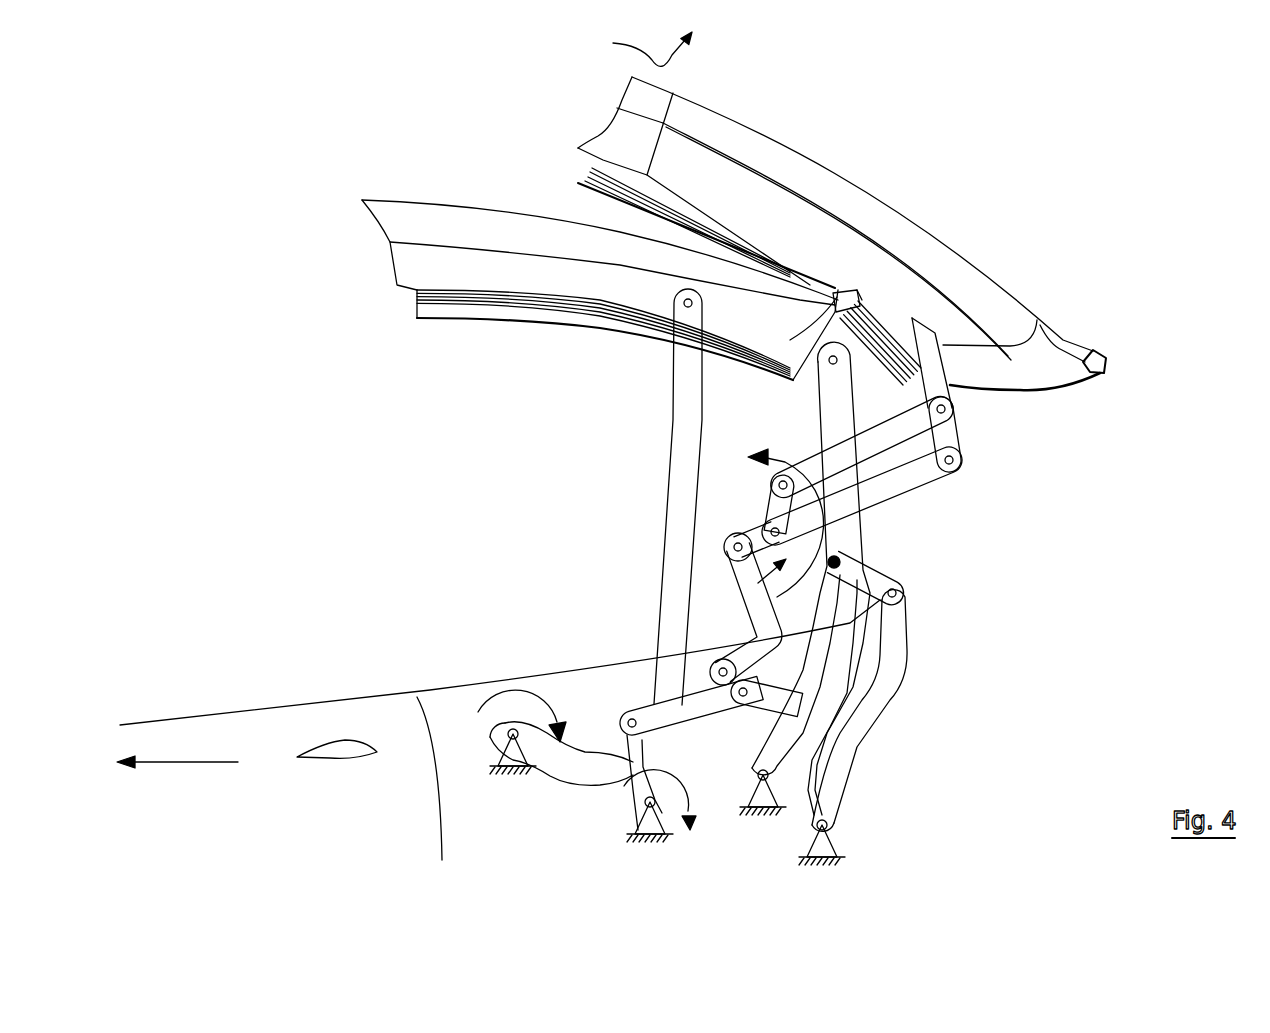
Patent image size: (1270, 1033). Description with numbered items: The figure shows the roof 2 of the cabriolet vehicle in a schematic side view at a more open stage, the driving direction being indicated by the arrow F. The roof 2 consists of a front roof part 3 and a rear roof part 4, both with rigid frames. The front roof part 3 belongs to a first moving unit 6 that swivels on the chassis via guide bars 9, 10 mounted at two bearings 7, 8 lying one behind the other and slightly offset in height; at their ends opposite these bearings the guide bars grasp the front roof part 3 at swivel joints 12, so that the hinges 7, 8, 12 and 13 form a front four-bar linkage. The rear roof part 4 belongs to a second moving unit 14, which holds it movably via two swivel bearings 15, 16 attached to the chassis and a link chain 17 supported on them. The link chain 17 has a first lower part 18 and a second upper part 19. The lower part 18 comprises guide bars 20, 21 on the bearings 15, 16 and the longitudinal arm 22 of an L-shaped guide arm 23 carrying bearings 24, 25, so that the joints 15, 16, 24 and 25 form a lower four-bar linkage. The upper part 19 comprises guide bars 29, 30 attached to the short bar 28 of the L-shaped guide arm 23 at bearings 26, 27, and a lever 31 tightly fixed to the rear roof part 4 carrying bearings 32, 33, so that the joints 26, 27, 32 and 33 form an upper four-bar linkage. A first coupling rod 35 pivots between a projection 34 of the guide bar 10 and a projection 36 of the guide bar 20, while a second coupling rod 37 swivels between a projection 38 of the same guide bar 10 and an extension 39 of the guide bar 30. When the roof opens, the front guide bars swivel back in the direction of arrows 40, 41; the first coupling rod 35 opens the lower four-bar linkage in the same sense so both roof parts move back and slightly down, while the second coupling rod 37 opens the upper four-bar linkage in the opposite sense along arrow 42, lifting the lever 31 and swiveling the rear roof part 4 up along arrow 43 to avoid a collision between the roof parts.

The roof 2 is at (842, 218).
The front roof part 3 is at (497, 232).
The rear roof part 4 is at (822, 223).
The first moving unit 6 is at (734, 218).
The bearing 7 is at (505, 738).
The bearing 8 is at (640, 822).
The guide bar 9 is at (638, 497).
The guide bar 10 is at (870, 578).
The swivel joint 12 is at (684, 306).
The hinge 13 is at (828, 366).
The second moving unit 14 is at (933, 193).
The swivel bearing 15 is at (748, 784).
The swivel bearing 16 is at (838, 820).
The link chain 17 is at (895, 578).
The first lower part 18 is at (775, 728).
The second upper part 19 is at (869, 474).
The guide bar 20 is at (827, 780).
The guide bar 21 is at (875, 711).
The longitudinal arm 22 is at (901, 571).
The L-shaped guide arm 23 is at (778, 628).
The bearing 24 is at (860, 555).
The bearing 25 is at (908, 590).
The bearing 26 is at (705, 502).
The bearing 27 is at (770, 532).
The short bar 28 is at (775, 500).
The guide bar 29 is at (890, 433).
The guide bar 30 is at (957, 473).
The lever 31 is at (948, 440).
The bearing 32 is at (957, 397).
The bearing 33 is at (958, 448).
The projection 34 is at (566, 780).
The first coupling rod 35 is at (657, 718).
The projection 36 is at (718, 778).
The second coupling rod 37 is at (753, 613).
The projection 38 is at (720, 677).
The extension 39 is at (743, 568).
The arrow 40 is at (533, 700).
The arrow 41 is at (637, 798).
The arrow 42 is at (768, 459).
The arrow 43 is at (636, 47).
The driving direction F is at (185, 762).